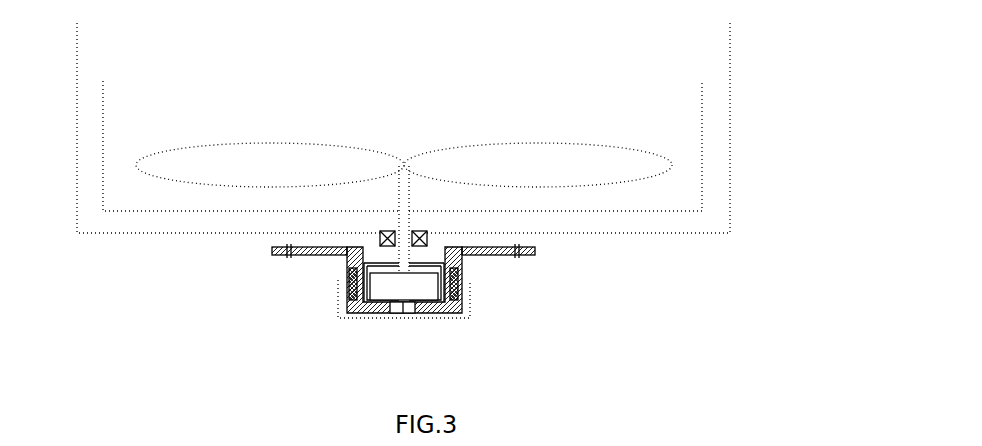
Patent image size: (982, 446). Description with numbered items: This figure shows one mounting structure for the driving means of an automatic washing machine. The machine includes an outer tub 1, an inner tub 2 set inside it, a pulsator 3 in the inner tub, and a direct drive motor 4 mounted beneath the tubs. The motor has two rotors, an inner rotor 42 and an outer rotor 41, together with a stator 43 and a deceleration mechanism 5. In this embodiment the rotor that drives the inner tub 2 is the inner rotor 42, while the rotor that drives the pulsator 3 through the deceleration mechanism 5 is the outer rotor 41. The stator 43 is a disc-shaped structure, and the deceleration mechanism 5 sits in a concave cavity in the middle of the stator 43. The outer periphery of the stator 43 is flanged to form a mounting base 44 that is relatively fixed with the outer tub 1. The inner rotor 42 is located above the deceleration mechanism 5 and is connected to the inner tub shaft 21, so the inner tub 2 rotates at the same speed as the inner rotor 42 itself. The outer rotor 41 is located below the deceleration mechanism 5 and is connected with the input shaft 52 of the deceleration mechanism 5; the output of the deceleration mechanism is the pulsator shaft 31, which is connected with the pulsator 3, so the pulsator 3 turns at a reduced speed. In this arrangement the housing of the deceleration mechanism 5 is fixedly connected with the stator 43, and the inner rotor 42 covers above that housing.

The outer tub 1 is at (731, 207).
The inner tub 2 is at (703, 168).
The pulsator 3 is at (597, 151).
The direct drive motor 4 is at (333, 323).
The deceleration mechanism 5 is at (448, 313).
The inner tub shaft 21 is at (395, 252).
The pulsator shaft 31 is at (460, 268).
The outer rotor 41 is at (375, 318).
The inner rotor 42 is at (456, 290).
The stator 43 is at (352, 285).
The mounting base 44 is at (530, 250).
The input shaft 52 is at (403, 313).